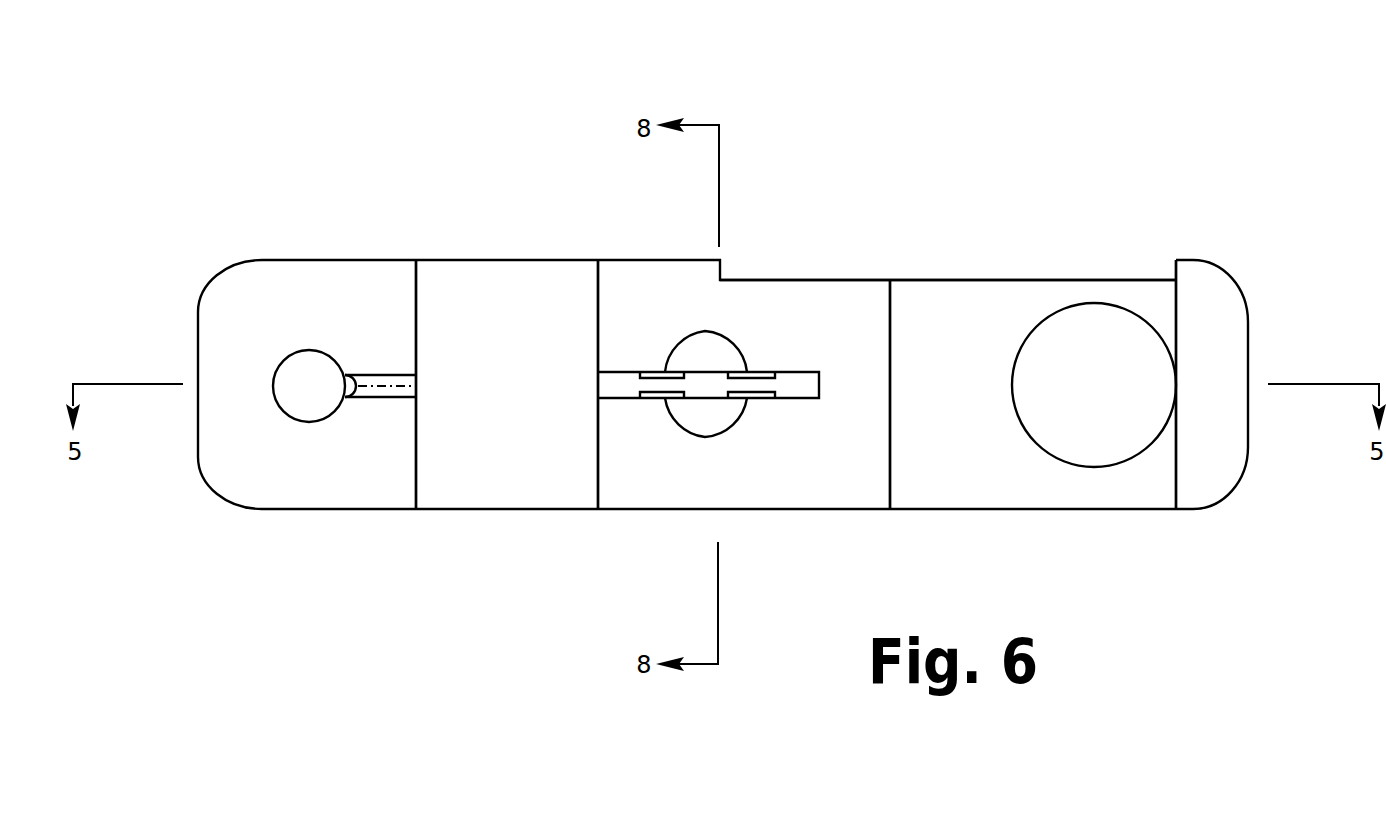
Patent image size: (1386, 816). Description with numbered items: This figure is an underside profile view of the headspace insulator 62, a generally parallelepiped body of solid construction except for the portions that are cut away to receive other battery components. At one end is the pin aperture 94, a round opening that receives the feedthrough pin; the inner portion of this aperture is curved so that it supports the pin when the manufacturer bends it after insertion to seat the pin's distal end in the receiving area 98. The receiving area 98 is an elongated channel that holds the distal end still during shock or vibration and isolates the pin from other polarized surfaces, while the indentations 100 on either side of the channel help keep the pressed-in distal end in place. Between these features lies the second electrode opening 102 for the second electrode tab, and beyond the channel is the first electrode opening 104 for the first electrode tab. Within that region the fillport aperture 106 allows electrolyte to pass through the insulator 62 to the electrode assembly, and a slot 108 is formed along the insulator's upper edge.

The headspace insulator 62 is at (811, 112).
The pin aperture 94 is at (332, 398).
The receiving area 98 is at (611, 400).
The indentations 100 is at (706, 384).
The second electrode opening 102 is at (537, 410).
The first electrode opening 104 is at (963, 430).
The fillport aperture 106 is at (1067, 396).
The slot 108 is at (963, 257).